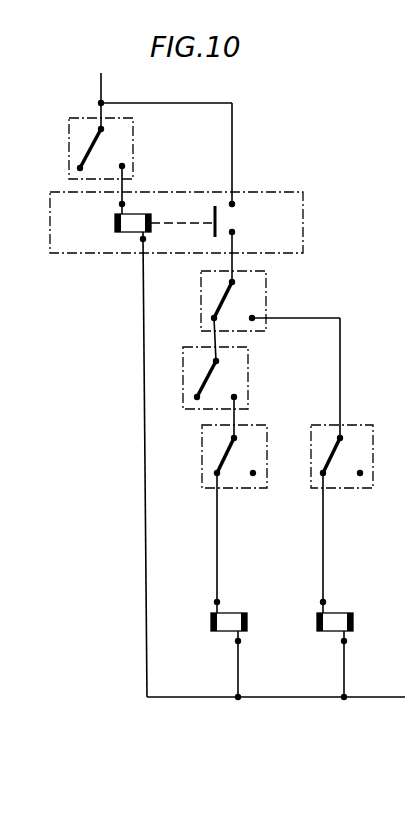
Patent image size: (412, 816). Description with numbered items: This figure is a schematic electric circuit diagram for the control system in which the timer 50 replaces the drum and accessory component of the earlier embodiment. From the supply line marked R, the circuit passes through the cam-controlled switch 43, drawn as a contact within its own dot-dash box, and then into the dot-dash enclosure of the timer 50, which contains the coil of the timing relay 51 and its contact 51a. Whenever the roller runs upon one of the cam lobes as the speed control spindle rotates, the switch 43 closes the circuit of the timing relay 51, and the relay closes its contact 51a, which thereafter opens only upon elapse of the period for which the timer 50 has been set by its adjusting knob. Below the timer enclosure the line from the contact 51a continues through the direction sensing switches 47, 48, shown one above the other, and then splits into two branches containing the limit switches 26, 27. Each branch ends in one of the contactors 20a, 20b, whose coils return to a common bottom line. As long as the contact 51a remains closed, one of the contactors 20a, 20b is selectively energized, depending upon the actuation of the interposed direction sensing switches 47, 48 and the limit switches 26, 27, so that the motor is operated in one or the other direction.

The power supply terminal R is at (104, 100).
The cam-controlled switch 43 is at (120, 141).
The timer 50 is at (52, 222).
The timing relay 51 is at (115, 223).
The contact of the timing relay 51a is at (215, 234).
The direction sensing switch 47 is at (254, 290).
The direction sensing switch 48 is at (235, 373).
The limit switch 26 is at (254, 452).
The limit switch 27 is at (360, 452).
The contactor 20a is at (228, 625).
The contactor 20b is at (339, 620).